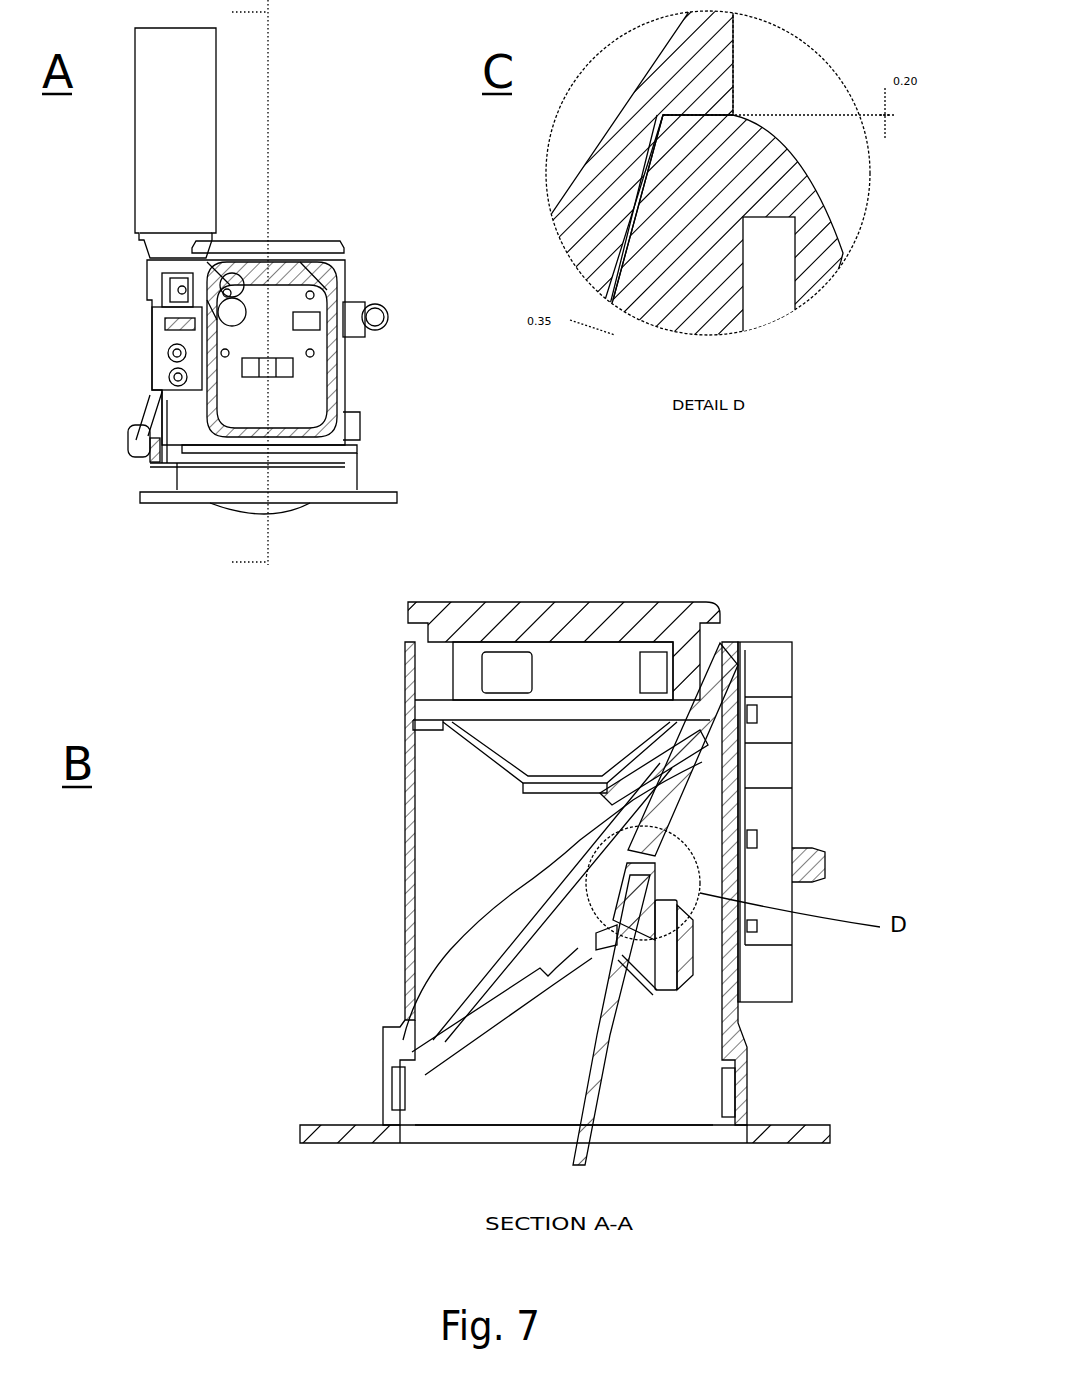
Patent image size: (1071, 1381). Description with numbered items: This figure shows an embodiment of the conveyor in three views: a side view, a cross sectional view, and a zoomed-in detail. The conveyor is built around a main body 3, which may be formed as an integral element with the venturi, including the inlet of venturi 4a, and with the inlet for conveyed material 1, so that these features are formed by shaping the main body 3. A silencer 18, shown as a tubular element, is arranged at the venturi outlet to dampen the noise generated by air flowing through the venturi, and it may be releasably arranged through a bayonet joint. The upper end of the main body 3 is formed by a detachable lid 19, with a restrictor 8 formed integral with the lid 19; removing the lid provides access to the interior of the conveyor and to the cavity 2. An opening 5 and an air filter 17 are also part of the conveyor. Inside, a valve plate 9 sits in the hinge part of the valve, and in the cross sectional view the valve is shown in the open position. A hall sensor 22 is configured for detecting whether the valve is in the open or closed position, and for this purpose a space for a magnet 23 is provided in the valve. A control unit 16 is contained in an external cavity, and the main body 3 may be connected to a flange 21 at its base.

The inlet for conveyed material 1 is at (376, 303).
The cavity 2 is at (468, 890).
The main body 3 is at (372, 858).
The inlet of venturi 4a is at (153, 458).
The opening 5 is at (500, 1031).
The restrictor 8 is at (528, 745).
The valve plate 9 is at (578, 1078).
The control unit 16 is at (238, 338).
The air filter 17 is at (690, 702).
The silencer 18 is at (170, 95).
The lid 19 is at (246, 246).
The flange 21 is at (368, 490).
The hall sensor 22 is at (757, 935).
The magnet/space for magnet 23 is at (683, 963).